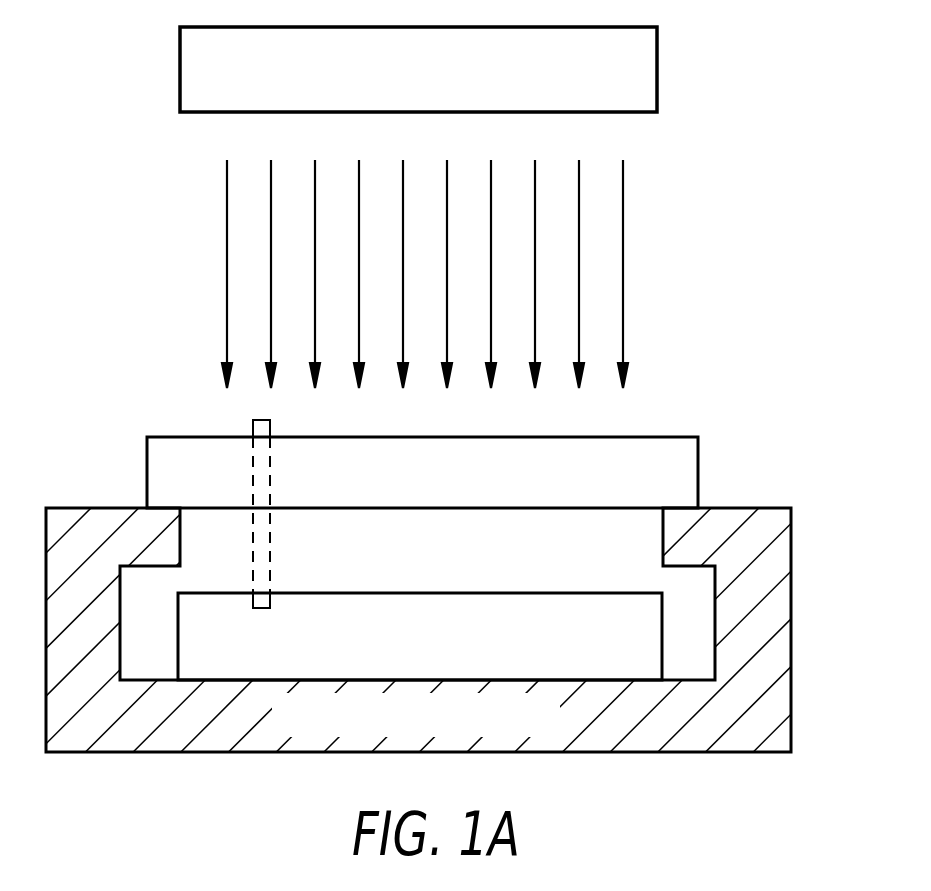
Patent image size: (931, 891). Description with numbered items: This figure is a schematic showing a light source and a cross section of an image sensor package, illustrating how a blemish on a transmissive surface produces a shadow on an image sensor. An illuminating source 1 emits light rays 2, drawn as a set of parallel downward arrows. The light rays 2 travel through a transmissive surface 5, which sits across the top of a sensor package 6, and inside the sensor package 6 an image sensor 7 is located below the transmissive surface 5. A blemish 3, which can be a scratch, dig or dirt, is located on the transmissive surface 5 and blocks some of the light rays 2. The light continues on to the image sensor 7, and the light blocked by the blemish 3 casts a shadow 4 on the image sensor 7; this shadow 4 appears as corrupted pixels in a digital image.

The illuminating source 1 is at (657, 58).
The light rays 2 is at (236, 241).
The blemish 3 is at (254, 427).
The shadow 4 is at (270, 601).
The transmissive surface 5 is at (667, 437).
The sensor package 6 is at (740, 508).
The image sensor 7 is at (662, 623).